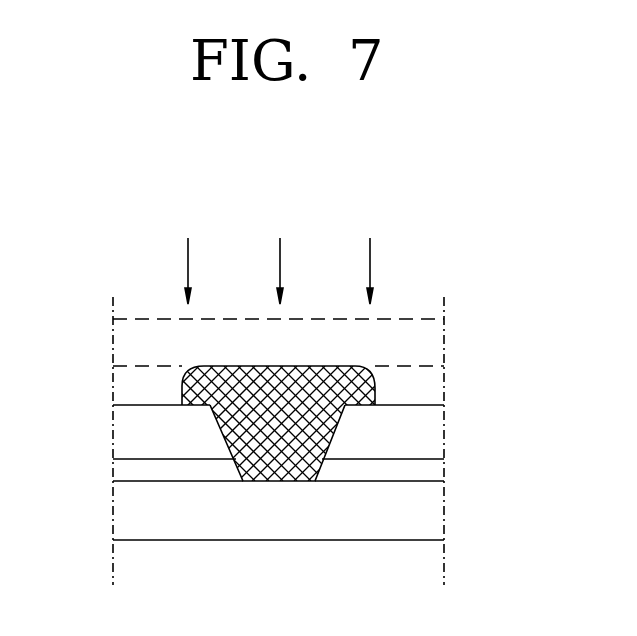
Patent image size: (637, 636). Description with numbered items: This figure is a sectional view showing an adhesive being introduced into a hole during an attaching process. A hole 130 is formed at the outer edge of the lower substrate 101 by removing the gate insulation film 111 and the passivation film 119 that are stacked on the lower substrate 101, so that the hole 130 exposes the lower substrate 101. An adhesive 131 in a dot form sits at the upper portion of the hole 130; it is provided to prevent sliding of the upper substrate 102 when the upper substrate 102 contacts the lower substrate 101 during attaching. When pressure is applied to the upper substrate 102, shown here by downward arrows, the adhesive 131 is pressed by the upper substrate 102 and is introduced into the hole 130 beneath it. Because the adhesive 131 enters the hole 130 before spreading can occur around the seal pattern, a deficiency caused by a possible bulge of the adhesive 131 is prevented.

The lower substrate 101 is at (428, 519).
The gate insulation film 111 is at (428, 476).
The passivation film 119 is at (428, 438).
The hole 130 is at (279, 470).
The adhesive 131 is at (357, 389).
The upper substrate 102 is at (428, 351).